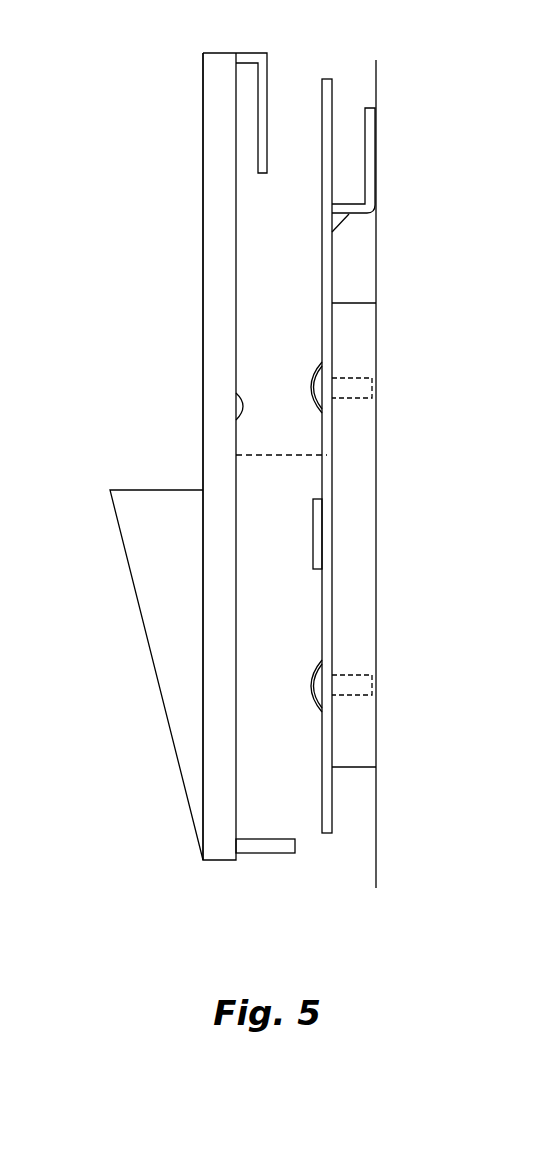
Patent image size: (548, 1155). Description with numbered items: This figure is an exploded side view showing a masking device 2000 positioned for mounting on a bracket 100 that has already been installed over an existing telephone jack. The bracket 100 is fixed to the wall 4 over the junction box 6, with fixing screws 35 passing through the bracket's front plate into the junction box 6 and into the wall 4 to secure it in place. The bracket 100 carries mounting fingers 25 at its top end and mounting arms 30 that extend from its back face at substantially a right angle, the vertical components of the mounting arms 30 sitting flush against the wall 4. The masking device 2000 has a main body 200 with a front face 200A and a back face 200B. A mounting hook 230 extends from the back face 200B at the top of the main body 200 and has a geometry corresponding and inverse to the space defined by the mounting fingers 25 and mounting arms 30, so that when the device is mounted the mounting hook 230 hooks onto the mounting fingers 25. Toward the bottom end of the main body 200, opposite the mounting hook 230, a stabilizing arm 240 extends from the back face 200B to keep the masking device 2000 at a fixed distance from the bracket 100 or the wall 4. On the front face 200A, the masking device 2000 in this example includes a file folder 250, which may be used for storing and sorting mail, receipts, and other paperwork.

The masking device 2000 is at (160, 140).
The main body 200 is at (218, 327).
The front face 200A is at (202, 388).
The back face 200B is at (240, 413).
The mounting hook 230 is at (268, 100).
The stabilizing arm 240 is at (268, 855).
The file folder 250 is at (147, 643).
The wall 4 is at (445, 238).
The bracket 100 is at (328, 848).
The mounting fingers 25 is at (332, 97).
The mounting arms 30 is at (372, 153).
The junction box 6 is at (358, 332).
The fixing screws 35 is at (353, 400).